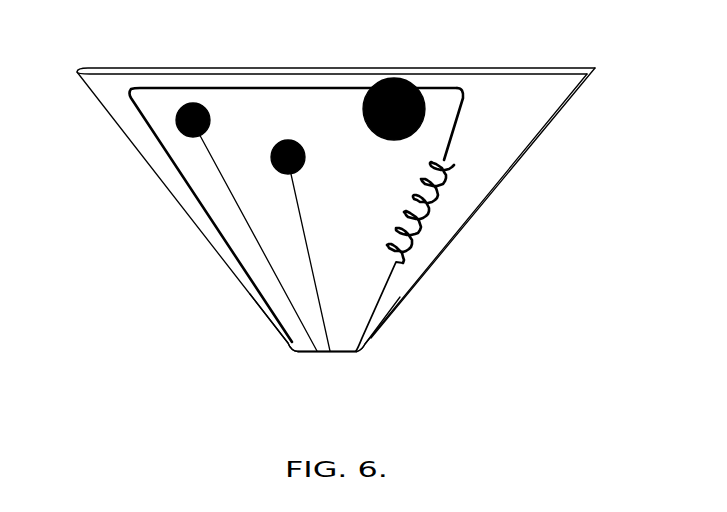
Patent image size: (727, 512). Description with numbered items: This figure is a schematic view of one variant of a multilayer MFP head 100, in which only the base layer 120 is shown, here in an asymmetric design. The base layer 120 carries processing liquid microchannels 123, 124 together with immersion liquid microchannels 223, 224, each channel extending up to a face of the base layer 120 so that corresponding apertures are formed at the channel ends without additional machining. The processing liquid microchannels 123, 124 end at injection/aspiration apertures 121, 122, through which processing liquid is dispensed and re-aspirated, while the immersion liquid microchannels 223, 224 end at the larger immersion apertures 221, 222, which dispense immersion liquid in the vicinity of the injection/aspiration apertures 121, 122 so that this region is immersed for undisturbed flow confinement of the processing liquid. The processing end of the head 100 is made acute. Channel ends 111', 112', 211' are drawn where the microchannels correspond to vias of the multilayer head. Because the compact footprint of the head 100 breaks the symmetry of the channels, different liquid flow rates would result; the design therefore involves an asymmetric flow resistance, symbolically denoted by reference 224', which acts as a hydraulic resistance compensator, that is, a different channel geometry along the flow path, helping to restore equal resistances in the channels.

The head 100 is at (337, 211).
The base layer 120 is at (502, 118).
The aperture 121 is at (318, 350).
The aperture 122 is at (330, 382).
The processing liquid microchannel 123 is at (261, 248).
The processing liquid microchannel 124 is at (320, 280).
The immersion aperture 221 is at (290, 340).
The immersion aperture 222 is at (370, 340).
The immersion liquid microchannel 223 is at (232, 199).
The immersion liquid microchannel 224 is at (529, 131).
The asymmetric flow resistance 224' is at (488, 256).
The channel end 111' is at (115, 120).
The channel end 112' is at (237, 103).
The channel end 211' is at (459, 84).